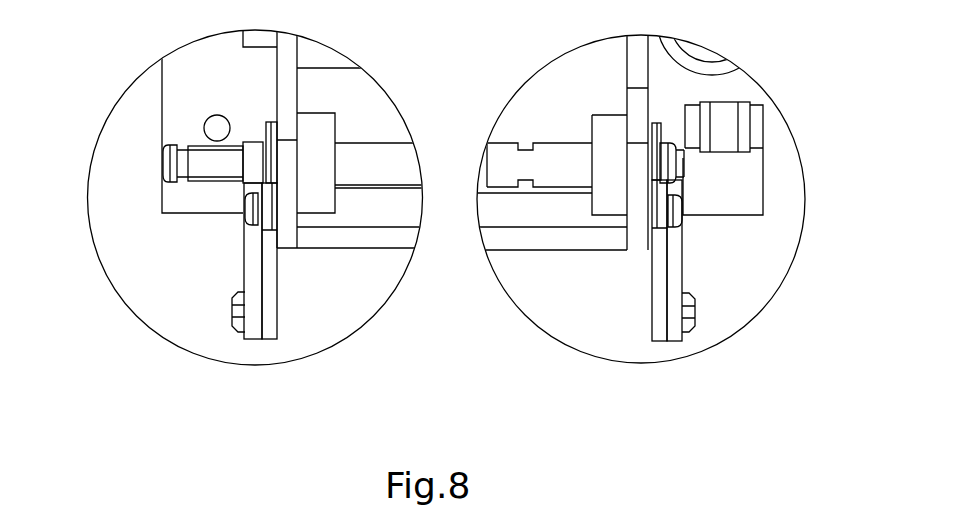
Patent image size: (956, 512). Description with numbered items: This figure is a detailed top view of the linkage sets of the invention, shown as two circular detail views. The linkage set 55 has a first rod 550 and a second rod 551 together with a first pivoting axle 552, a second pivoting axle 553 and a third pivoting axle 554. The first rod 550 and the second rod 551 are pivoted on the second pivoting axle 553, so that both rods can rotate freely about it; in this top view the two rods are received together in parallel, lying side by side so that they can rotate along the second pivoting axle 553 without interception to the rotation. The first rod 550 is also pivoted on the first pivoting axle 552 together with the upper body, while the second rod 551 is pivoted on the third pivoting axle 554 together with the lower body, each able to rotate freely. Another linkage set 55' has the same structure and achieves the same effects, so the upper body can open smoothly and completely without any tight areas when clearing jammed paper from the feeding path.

The linkage set 55 is at (140, 138).
The another linkage set 55' is at (776, 219).
The first rod 550 is at (267, 293).
The second rod 551 is at (250, 258).
The first pivoting axle 552 is at (250, 212).
The second pivoting axle 553 is at (233, 318).
The third pivoting axle 554 is at (168, 158).